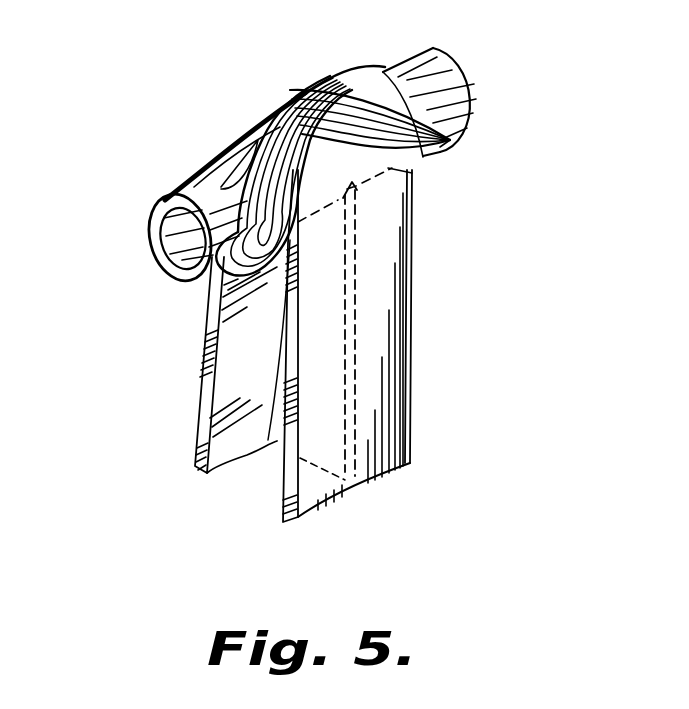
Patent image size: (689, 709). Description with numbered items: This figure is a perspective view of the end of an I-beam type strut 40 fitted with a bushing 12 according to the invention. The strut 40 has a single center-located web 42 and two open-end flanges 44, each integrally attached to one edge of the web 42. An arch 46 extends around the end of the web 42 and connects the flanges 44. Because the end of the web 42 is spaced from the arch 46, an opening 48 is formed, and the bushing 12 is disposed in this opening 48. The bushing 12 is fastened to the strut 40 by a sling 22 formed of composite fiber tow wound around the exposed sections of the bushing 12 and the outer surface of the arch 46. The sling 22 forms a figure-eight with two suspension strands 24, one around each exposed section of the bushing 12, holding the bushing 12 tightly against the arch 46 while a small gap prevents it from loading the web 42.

The bushing 12 is at (450, 70).
The sling 22 is at (311, 88).
The suspension strands 24 is at (444, 150).
The I-beam type strut 40 is at (336, 355).
The web 42 is at (276, 443).
The flanges 44 is at (230, 378).
The arch 46 is at (375, 153).
The opening 48 is at (207, 188).